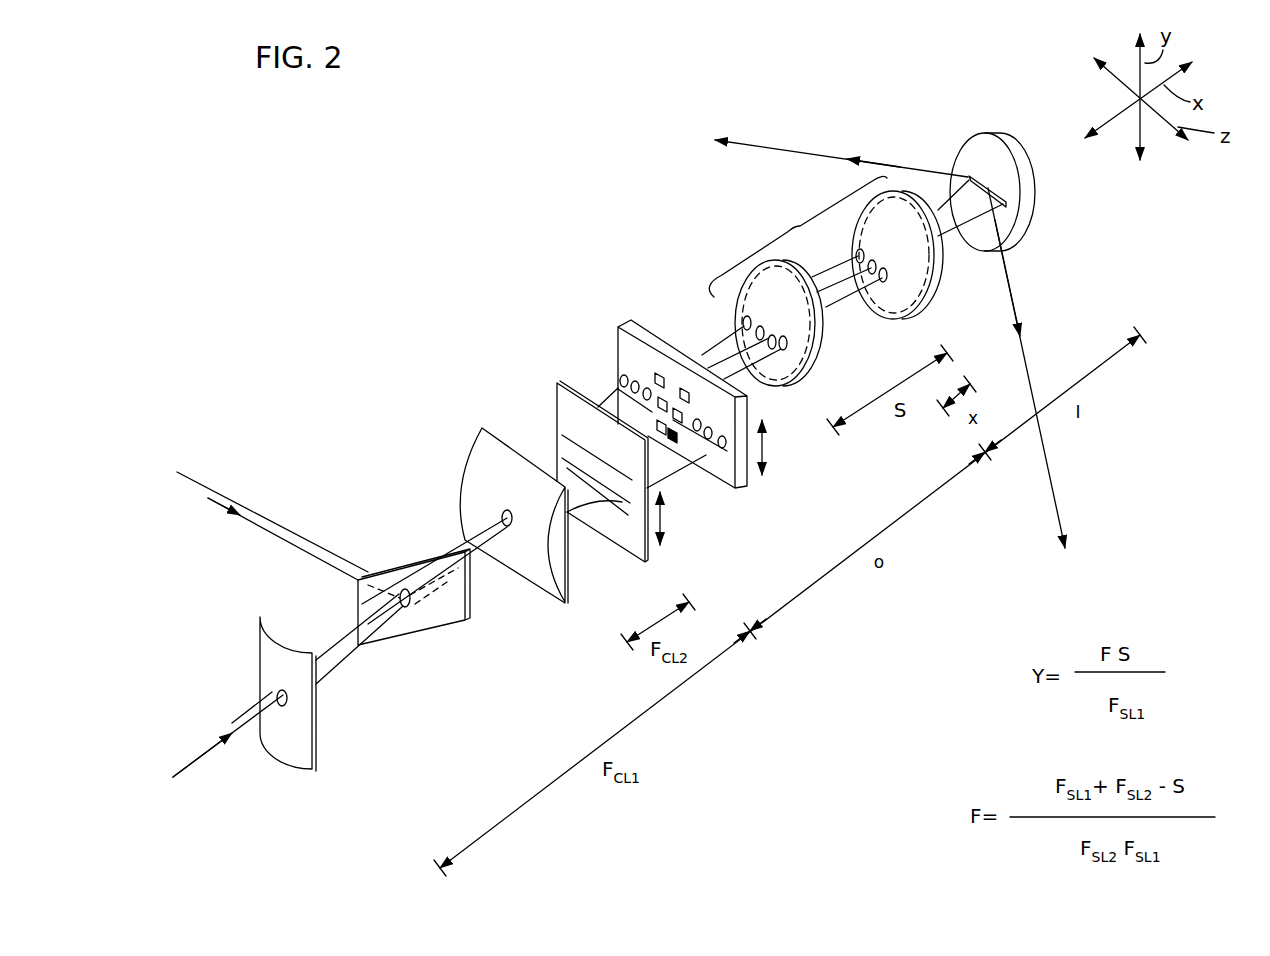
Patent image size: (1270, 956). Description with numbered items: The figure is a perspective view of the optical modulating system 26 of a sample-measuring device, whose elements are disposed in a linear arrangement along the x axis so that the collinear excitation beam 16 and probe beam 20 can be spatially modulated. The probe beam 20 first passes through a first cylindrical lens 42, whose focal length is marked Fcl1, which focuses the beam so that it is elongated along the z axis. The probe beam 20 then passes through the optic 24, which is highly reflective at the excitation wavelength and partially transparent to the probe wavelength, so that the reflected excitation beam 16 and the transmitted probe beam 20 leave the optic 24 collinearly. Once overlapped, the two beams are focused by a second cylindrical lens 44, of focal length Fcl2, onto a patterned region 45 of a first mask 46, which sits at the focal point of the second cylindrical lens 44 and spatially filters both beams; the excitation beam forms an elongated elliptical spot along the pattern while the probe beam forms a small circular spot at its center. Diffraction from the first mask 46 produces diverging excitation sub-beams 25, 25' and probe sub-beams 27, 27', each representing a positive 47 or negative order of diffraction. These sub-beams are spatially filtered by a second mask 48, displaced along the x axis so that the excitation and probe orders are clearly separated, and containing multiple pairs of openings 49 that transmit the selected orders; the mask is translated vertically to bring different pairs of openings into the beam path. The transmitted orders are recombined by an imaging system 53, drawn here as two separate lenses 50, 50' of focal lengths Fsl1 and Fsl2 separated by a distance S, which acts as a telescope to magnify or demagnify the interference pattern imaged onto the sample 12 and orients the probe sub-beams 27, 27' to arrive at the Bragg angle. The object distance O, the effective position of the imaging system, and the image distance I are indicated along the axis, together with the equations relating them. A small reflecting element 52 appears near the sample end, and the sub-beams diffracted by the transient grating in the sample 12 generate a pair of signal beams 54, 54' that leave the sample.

The sample 12 is at (1025, 233).
The excitation optical beam 16 is at (300, 528).
The probe optical beam 20 is at (254, 722).
The second high-reflecting optic 24 is at (432, 618).
The excitation sub-beam 25 is at (786, 422).
The excitation sub-beam 25' is at (723, 341).
The optical modulating system 26 is at (632, 204).
The probe sub-beam 27 is at (885, 240).
The probe sub-beam 27' is at (868, 302).
The first cylindrical lens 42 is at (316, 762).
The second cylindrical lens 44 is at (536, 573).
The patterned region 45 is at (572, 458).
The first mask 46 is at (620, 537).
The positive diffraction orders 47 is at (697, 443).
The second mask 48 is at (745, 488).
The openings 49 is at (632, 357).
The first imaging lens 50 is at (796, 369).
The second imaging lens 50' is at (906, 266).
The mirror 52 is at (978, 180).
The imaging system 53 is at (798, 236).
The signal beam 54 is at (1059, 368).
The signal beam 54' is at (841, 136).